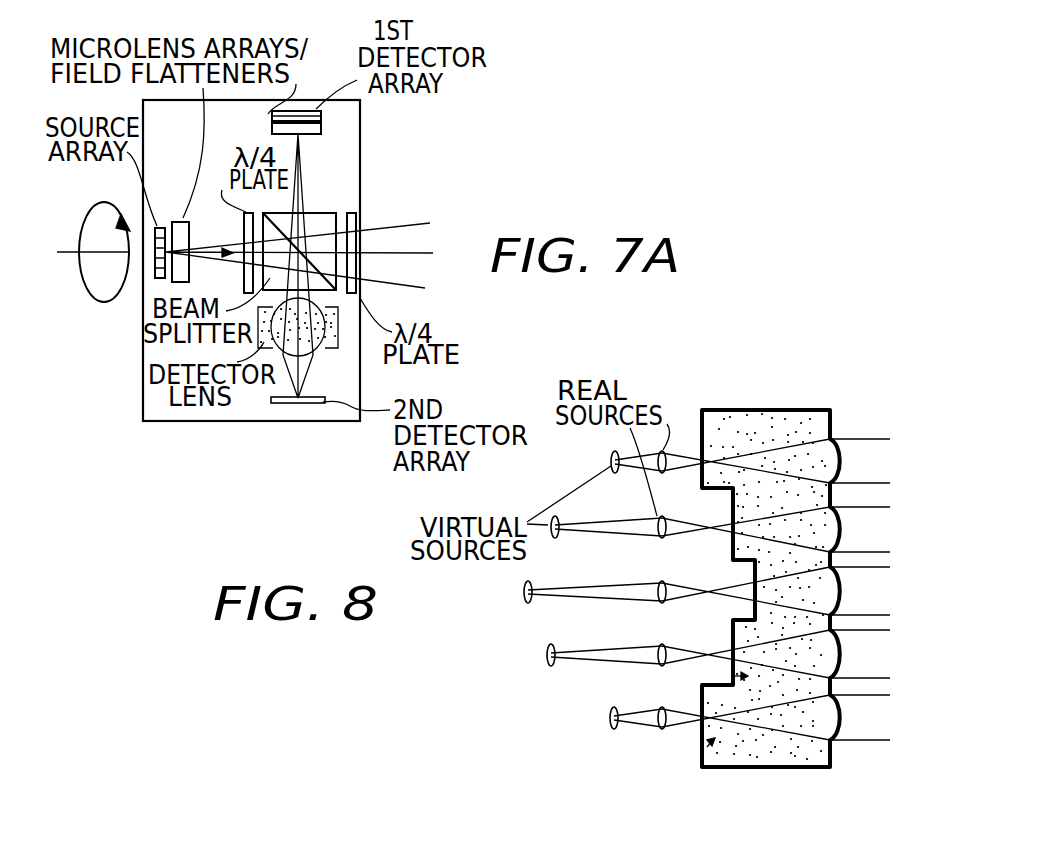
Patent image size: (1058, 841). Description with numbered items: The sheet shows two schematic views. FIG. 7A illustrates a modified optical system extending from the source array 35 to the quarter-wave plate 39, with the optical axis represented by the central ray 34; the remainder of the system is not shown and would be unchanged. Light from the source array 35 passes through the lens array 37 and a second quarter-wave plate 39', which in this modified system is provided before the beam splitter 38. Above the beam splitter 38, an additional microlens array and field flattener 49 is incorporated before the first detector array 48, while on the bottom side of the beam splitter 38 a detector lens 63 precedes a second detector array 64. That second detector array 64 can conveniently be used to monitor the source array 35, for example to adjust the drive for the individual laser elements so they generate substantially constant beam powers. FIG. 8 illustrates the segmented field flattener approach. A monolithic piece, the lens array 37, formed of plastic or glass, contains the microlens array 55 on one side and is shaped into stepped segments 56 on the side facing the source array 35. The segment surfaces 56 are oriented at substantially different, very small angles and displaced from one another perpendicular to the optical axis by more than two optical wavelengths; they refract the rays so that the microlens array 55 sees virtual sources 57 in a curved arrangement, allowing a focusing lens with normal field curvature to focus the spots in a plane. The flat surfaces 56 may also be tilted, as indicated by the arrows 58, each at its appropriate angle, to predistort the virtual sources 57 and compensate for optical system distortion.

In FIG. 7A, the central ray 34 is at (60, 255).
In FIG. 7A, the source array 35 is at (150, 278).
In FIG. 8, the source array 35 is at (659, 737).
In FIG. 7A, the lens array 37 is at (187, 218).
In FIG. 8, the lens array 37 is at (850, 410).
In FIG. 7A, the beam splitter 38 is at (340, 213).
In FIG. 7A, the quarter-wave plate 39 is at (345, 239).
In FIG. 7A, the second quarter-wave plate 39' is at (317, 65).
In FIG. 7A, the first detector array 48 is at (322, 116).
In FIG. 7A, the microlens array and field flattener 49 is at (322, 126).
In FIG. 7A, the detector lens 63 is at (153, 403).
In FIG. 7A, the second detector array 64 is at (285, 403).
In FIG. 8, the microlens array 55 is at (840, 458).
In FIG. 8, the segments 56 is at (700, 450).
In FIG. 8, the virtual sources 57 is at (610, 717).
In FIG. 8, the arrows 58 is at (728, 676).